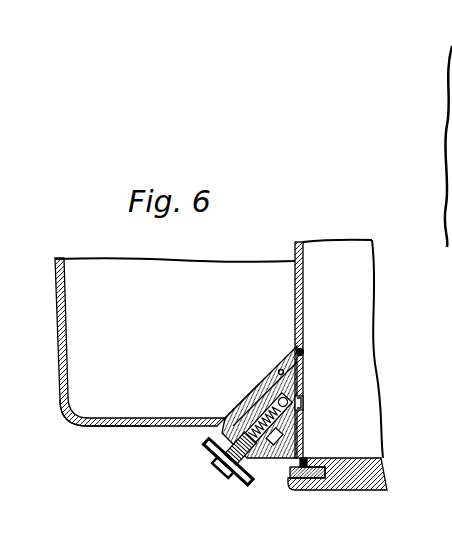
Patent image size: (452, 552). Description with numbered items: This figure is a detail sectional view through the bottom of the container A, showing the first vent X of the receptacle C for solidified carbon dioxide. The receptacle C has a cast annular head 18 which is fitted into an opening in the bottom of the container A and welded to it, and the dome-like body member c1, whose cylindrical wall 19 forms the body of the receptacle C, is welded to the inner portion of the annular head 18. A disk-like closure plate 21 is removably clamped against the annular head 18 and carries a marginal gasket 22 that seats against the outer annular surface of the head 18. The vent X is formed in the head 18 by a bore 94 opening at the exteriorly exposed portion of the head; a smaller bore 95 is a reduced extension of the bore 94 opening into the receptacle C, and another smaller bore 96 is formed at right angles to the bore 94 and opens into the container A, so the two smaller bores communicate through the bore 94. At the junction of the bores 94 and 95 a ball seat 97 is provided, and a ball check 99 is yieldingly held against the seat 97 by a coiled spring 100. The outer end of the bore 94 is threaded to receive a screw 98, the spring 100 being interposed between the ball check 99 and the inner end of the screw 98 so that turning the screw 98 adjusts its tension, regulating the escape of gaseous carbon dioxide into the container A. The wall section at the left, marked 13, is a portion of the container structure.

The tray side wall 13 is at (65, 298).
The container A is at (82, 428).
The cylindrical wall 19 is at (300, 280).
The dome-like body member c1 is at (382, 312).
The closure plate 21 is at (362, 478).
The marginal gasket 22 is at (315, 479).
The small bore 96 is at (236, 396).
The bore 94 is at (238, 407).
The ball check 99 is at (277, 385).
The ball seat 97 is at (281, 371).
The vent X is at (243, 387).
The receptacle C is at (288, 341).
The coiled spring 100 is at (277, 438).
The small bore 95 is at (305, 378).
The screw 98 is at (238, 482).
The annular head 18 is at (303, 410).